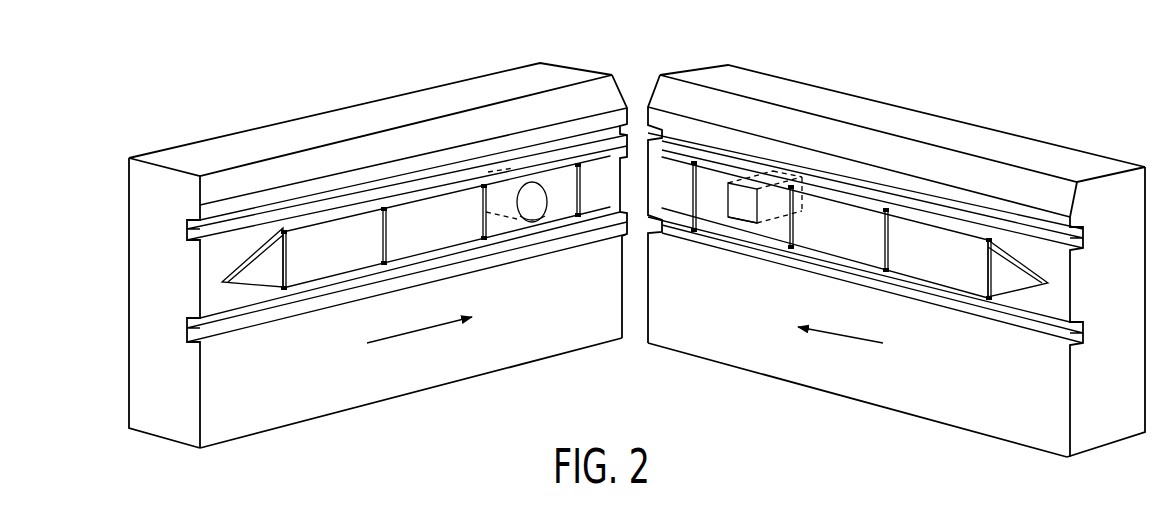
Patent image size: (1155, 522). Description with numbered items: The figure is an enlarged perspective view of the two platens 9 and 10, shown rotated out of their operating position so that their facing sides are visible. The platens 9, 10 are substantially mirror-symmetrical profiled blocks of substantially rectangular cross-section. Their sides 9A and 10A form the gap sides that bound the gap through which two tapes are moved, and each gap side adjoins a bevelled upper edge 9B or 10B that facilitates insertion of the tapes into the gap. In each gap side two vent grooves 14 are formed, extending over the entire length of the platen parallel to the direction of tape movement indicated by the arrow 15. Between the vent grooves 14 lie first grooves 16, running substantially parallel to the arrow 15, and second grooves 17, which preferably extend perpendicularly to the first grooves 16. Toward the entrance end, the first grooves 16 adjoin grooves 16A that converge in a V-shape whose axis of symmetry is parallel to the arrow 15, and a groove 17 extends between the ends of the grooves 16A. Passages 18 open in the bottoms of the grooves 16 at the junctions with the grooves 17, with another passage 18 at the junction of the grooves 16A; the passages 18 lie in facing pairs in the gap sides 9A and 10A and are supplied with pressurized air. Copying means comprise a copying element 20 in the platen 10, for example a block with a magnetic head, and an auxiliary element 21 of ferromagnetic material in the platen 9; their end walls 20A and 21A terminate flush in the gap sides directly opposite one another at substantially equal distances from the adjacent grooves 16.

The platen 9 is at (363, 94).
The side of platen 9A is at (433, 388).
The bevelled upper edge 9B is at (482, 110).
The platen 10 is at (833, 84).
The gap side 10A is at (865, 392).
The bevelled upper edge 10B is at (902, 125).
The vent grooves 14 is at (195, 230).
The arrow 15 is at (423, 331).
The first grooves 16 is at (406, 207).
The grooves converging in a V-shape 16A is at (255, 246).
The second grooves 17 is at (581, 192).
The passages 18 is at (283, 231).
The copying element 20 is at (738, 203).
The end wall 20A is at (745, 222).
The auxiliary element 21 is at (535, 190).
The end wall 21A is at (533, 222).